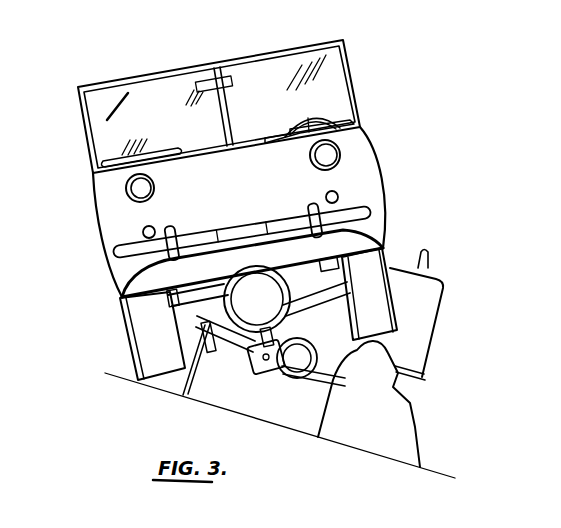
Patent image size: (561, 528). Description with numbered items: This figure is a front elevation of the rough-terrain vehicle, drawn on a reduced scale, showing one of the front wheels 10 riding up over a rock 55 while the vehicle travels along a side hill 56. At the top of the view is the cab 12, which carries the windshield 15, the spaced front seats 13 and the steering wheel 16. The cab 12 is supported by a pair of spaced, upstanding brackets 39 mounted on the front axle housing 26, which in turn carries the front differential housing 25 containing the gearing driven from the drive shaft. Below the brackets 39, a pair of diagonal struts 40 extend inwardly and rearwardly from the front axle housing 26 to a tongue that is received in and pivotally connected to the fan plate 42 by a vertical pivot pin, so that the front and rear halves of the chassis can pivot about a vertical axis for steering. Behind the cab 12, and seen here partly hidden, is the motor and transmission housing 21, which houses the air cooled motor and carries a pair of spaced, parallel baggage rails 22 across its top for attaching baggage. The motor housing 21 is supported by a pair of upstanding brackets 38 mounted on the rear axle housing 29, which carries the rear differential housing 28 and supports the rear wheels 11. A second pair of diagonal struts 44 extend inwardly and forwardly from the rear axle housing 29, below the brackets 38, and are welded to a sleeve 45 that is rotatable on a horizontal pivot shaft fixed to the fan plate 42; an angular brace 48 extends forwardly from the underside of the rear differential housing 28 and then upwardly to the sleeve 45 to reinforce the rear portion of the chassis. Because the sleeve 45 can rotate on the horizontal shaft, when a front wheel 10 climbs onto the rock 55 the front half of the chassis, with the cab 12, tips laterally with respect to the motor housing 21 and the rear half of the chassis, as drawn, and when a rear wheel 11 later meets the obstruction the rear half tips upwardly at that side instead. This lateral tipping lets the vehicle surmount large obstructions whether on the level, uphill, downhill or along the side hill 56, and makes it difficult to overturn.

The front wheels 10 is at (147, 368).
The rear wheels 11 is at (183, 387).
The cab 12 is at (99, 222).
The front seats 13 is at (178, 152).
The windshield 15 is at (343, 43).
The steering wheel 16 is at (307, 117).
The motor and transmission housing 21 is at (432, 333).
The baggage rails 22 is at (425, 265).
The differential housing 25 is at (250, 278).
The front axle housing 26 is at (207, 281).
The differential housing 28 is at (282, 382).
The rear axle housing 29 is at (338, 372).
The brackets 38 is at (252, 322).
The brackets 39 is at (170, 303).
The diagonal struts 40 is at (327, 298).
The fan plate 42 is at (267, 378).
The diagonal struts 44 is at (178, 347).
The sleeve 45 is at (272, 377).
The angular brace 48 is at (270, 320).
The rock 55 is at (410, 447).
The side hill 56 is at (265, 418).